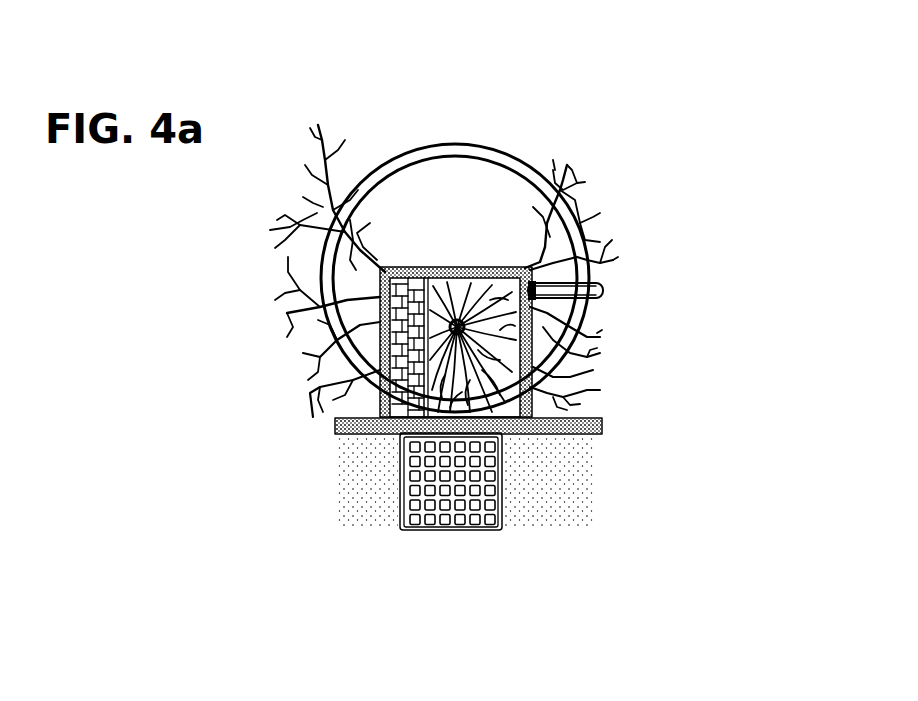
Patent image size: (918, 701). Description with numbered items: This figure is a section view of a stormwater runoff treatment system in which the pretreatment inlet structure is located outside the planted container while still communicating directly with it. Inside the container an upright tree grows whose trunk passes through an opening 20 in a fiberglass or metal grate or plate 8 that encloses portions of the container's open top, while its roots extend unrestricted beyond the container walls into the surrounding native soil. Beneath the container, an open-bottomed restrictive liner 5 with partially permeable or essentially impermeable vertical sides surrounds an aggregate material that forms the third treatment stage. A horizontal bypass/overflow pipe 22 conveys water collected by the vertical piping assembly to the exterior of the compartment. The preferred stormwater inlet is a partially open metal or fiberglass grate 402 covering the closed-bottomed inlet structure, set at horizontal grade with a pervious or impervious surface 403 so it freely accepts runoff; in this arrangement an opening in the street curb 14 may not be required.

The restrictive liner 5 is at (416, 143).
The opening 20 is at (457, 320).
The grate or plate 8 is at (399, 283).
The bypass/overflow pipe 22 is at (607, 303).
The street curb 14 is at (570, 435).
The grate 402 is at (497, 532).
The pervious or impervious surface 403 is at (338, 505).